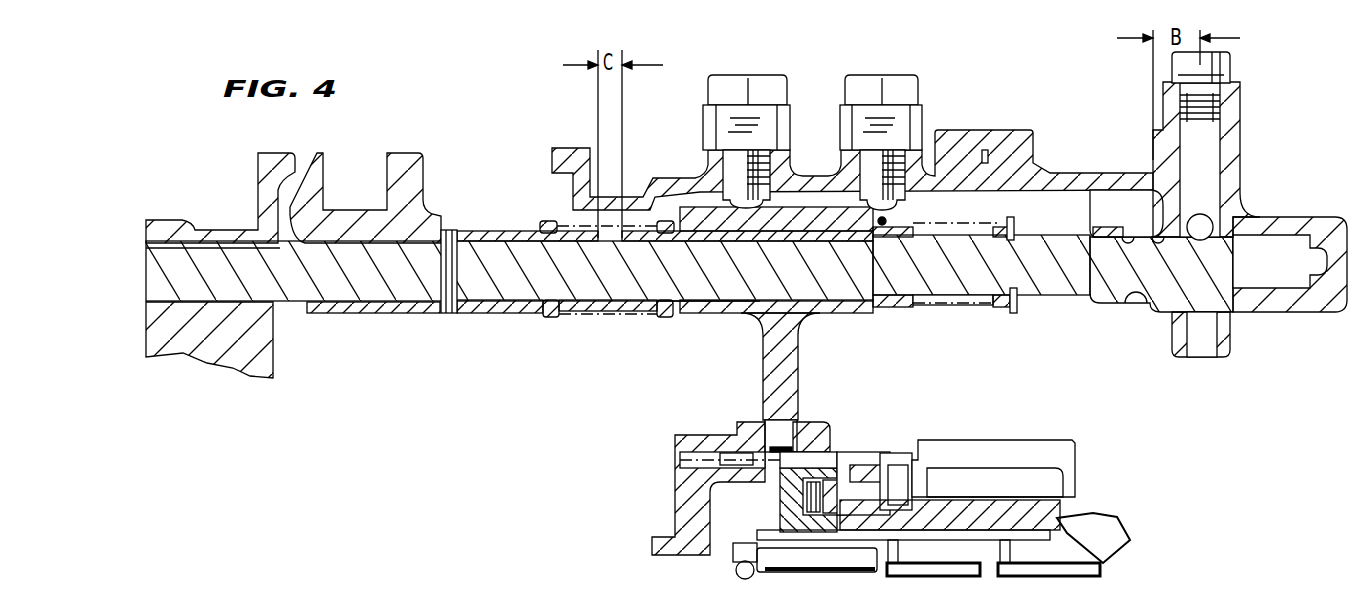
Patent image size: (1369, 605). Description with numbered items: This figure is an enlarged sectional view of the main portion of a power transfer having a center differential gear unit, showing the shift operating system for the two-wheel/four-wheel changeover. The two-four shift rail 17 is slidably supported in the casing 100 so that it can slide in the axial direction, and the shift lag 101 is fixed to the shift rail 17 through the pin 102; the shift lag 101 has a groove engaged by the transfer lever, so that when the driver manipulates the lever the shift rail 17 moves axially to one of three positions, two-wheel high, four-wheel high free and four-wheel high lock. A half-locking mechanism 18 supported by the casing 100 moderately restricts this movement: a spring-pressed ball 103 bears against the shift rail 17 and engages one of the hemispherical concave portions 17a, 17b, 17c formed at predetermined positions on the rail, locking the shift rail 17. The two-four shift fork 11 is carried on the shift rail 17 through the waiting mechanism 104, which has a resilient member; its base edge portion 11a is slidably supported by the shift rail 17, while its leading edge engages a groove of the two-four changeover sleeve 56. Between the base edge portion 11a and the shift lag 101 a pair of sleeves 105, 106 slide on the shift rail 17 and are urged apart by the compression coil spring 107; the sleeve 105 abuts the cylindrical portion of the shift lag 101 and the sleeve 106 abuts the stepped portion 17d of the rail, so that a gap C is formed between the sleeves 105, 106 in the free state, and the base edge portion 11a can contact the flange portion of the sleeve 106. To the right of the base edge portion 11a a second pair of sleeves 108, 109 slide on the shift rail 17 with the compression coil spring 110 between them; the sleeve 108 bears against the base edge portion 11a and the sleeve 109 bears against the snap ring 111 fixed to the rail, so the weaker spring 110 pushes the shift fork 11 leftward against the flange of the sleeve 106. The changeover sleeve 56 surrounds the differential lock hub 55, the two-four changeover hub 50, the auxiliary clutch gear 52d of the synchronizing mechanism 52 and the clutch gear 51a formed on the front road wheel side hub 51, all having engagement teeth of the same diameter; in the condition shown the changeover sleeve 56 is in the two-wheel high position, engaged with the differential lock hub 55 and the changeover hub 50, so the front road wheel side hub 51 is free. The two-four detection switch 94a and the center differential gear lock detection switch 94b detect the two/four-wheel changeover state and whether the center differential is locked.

The 2/4 shift rail 17 is at (689, 293).
The casing 100 is at (239, 340).
The shift lag 101 is at (293, 176).
The pin 102 is at (462, 251).
The waiting mechanism 104 is at (554, 213).
The sleeve 105 is at (566, 327).
The sleeve 106 is at (673, 327).
The compression coil spring 107 is at (608, 327).
The 2/4 shift fork 11 is at (852, 291).
The base edge portion 11a is at (776, 326).
The stepped portion 17d is at (710, 287).
The center differential gear lock detection switch 94b is at (766, 141).
The 2/4 detection switch 94a is at (908, 142).
The sleeve 108 is at (893, 286).
The compression coil spring 110 is at (956, 289).
The sleeve 109 is at (1021, 321).
The snap ring 111 is at (1024, 219).
The concave portion 17c is at (1125, 233).
The concave portion 17b is at (1193, 298).
The concave portion 17a is at (1290, 264).
The half-locking mechanism 18 is at (1243, 136).
The ball 103 is at (1235, 208).
The differential gear lock hub 55 is at (746, 488).
The 2/4 changeover sleeve 56 is at (816, 428).
The 2/4 changeover hub 50 is at (787, 492).
The synchronizing mechanism 52 is at (788, 510).
The outer synchronizer ring clutch gear 52d is at (863, 462).
The front drive sprocket clutch gear 51a is at (910, 458).
The front road wheel side hub 51 is at (981, 472).